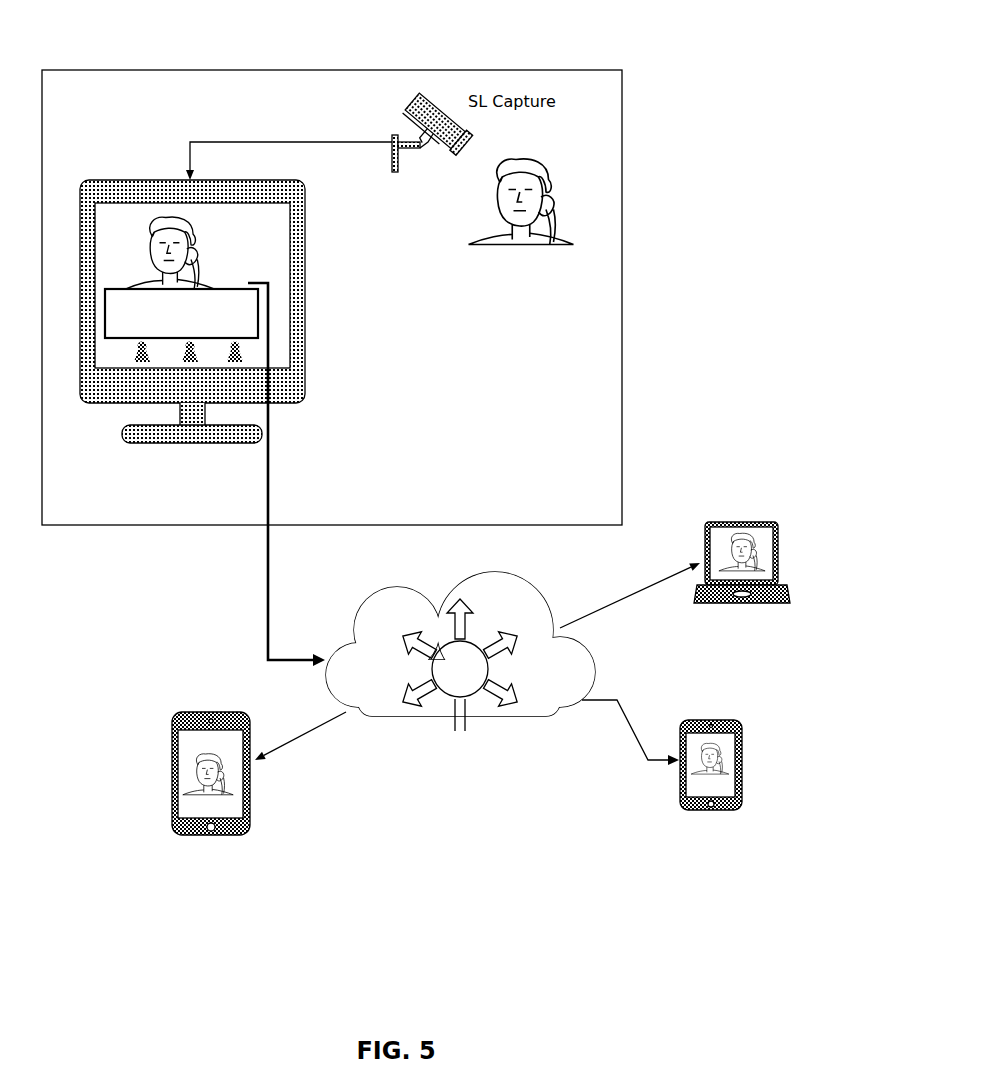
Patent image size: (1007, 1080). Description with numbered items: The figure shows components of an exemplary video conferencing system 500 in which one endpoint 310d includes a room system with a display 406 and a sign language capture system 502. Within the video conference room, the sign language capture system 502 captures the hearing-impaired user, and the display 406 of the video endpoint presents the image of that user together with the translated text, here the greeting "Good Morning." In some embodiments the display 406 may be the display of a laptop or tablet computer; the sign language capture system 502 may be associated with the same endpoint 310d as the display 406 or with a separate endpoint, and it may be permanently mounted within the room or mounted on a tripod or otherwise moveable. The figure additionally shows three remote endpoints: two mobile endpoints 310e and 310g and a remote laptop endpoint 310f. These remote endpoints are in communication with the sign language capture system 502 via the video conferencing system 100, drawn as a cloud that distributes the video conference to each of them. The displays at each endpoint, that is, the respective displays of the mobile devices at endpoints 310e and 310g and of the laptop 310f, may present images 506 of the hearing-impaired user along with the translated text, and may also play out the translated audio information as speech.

The video conferencing system 500 is at (692, 57).
The sign language capture system 502 is at (367, 102).
The images of the hearing impaired-user 506 is at (103, 238).
The display 406 is at (177, 334).
The endpoint 310d is at (53, 511).
The video conferencing system 100 is at (449, 799).
The remote laptop endpoint 310f is at (728, 633).
The mobile endpoint 310e is at (190, 884).
The mobile endpoint 310g is at (700, 861).